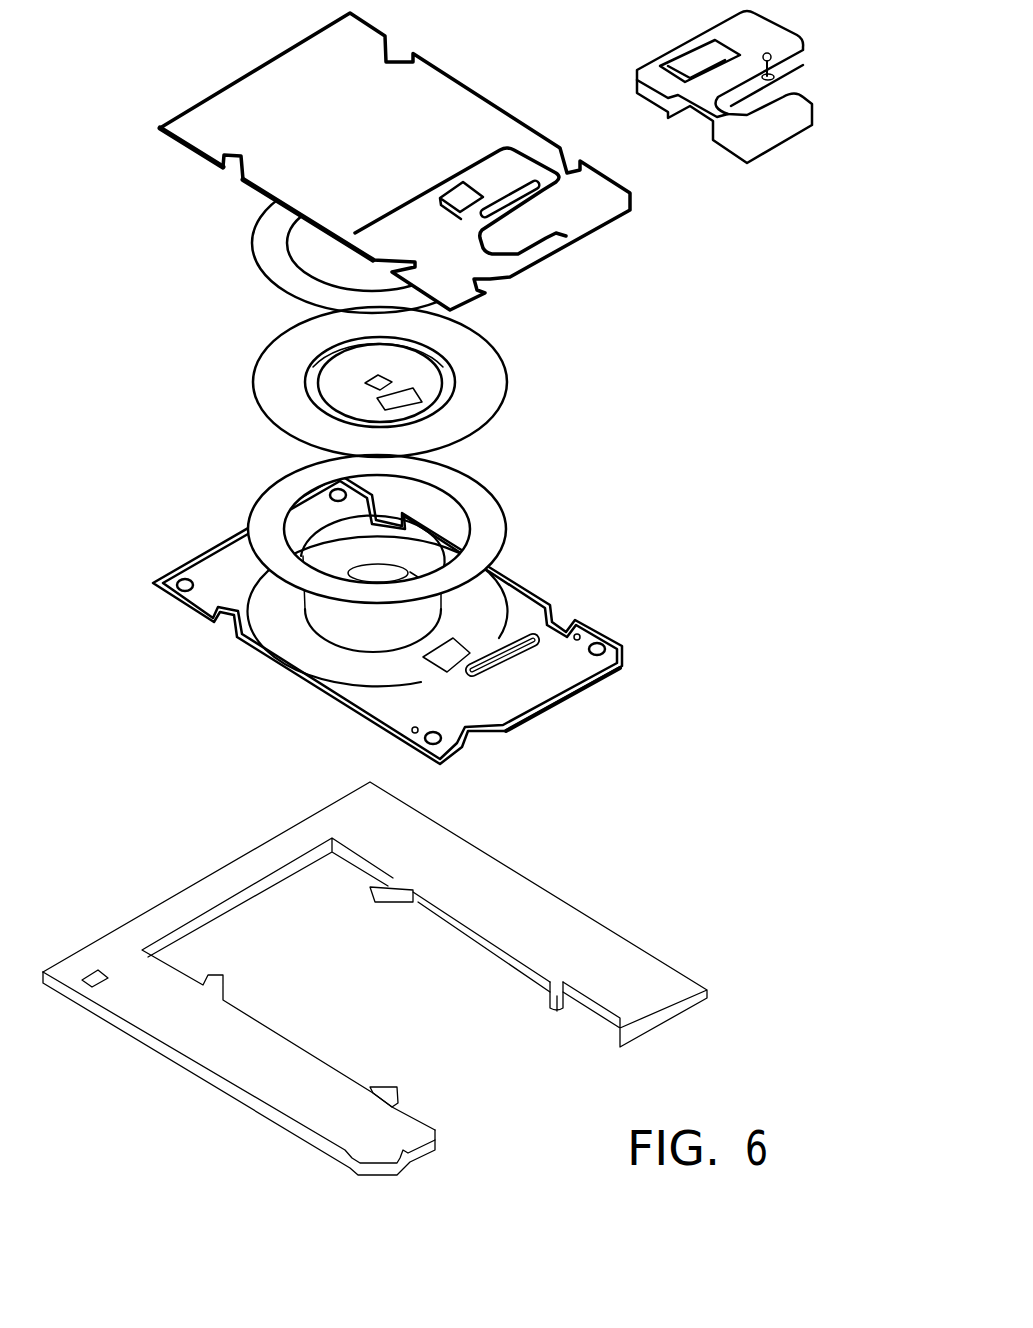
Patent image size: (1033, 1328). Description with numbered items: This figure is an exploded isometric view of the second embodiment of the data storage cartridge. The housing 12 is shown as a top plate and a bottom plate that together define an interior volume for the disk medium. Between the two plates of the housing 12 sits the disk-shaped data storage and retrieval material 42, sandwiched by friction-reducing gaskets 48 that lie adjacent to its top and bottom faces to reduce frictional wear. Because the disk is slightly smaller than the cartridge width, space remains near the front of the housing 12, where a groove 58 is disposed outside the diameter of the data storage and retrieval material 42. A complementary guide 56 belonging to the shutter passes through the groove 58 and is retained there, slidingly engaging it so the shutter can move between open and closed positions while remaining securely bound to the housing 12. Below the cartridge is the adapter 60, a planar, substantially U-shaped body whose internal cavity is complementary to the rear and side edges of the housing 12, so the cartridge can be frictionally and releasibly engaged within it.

The housing 12 is at (160, 128).
The data storage and retrieval material 42 is at (250, 373).
The friction-reducing gaskets 48 is at (250, 240).
The guide 56 is at (790, 78).
The groove 58 is at (537, 197).
The adapter 60 is at (170, 898).